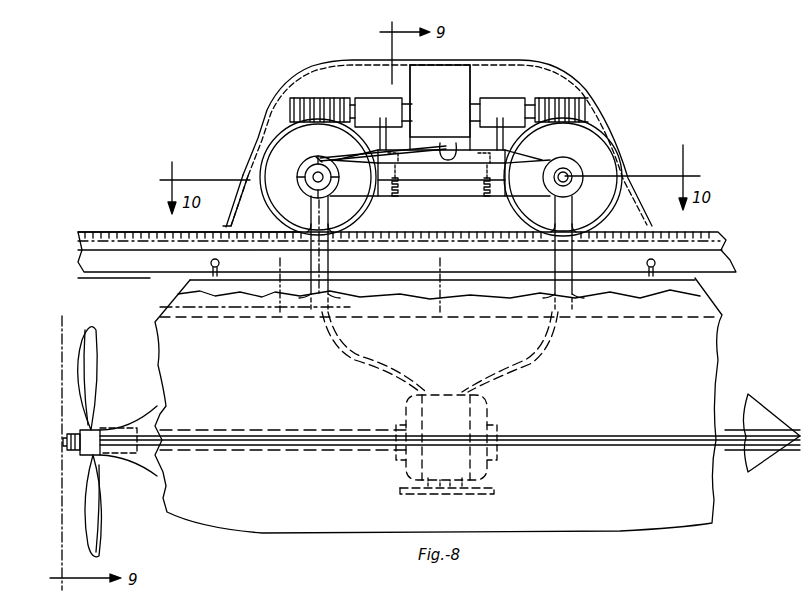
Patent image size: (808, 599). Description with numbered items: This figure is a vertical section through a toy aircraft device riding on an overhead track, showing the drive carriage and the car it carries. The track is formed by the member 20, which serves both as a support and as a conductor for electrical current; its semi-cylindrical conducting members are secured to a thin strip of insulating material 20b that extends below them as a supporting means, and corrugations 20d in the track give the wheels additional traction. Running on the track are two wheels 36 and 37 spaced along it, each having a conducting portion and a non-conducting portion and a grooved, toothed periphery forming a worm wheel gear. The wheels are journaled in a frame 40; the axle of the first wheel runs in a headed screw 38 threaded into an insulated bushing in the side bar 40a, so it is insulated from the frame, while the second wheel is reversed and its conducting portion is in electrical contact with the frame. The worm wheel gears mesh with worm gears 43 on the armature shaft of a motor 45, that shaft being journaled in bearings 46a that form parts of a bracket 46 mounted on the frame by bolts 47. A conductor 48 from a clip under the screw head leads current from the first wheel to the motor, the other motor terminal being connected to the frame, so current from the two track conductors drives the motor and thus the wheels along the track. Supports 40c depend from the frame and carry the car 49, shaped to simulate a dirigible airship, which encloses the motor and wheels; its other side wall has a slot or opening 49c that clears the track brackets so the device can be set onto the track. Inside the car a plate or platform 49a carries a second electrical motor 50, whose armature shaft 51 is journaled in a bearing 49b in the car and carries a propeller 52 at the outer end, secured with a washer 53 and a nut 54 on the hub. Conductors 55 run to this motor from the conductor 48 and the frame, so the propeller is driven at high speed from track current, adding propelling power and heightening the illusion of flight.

The member 20 is at (694, 225).
The thin strip of insulating material 20b is at (104, 278).
The corrugations 20d is at (118, 224).
The wheel 36 is at (272, 152).
The wheel 37 is at (607, 148).
The headed screw 38 is at (305, 180).
The frame 40 is at (540, 197).
The side bar 40a is at (440, 190).
The supports 40c is at (333, 262).
The worm gears 43 is at (296, 98).
The motor 45 is at (460, 66).
The bracket 46 is at (402, 192).
The bearings 46a is at (376, 98).
The bolts 47 is at (480, 192).
The conductor 48 is at (318, 150).
The car 49 is at (700, 358).
The plate or platform 49a is at (495, 490).
The bearing 49b is at (122, 428).
The slot or opening 49c is at (216, 228).
The electrical motor 50 is at (482, 455).
The armature shaft 51 is at (248, 442).
The propeller 52 is at (94, 382).
The washer 53 is at (86, 464).
The nut 54 is at (72, 432).
The conductors 55 is at (510, 370).